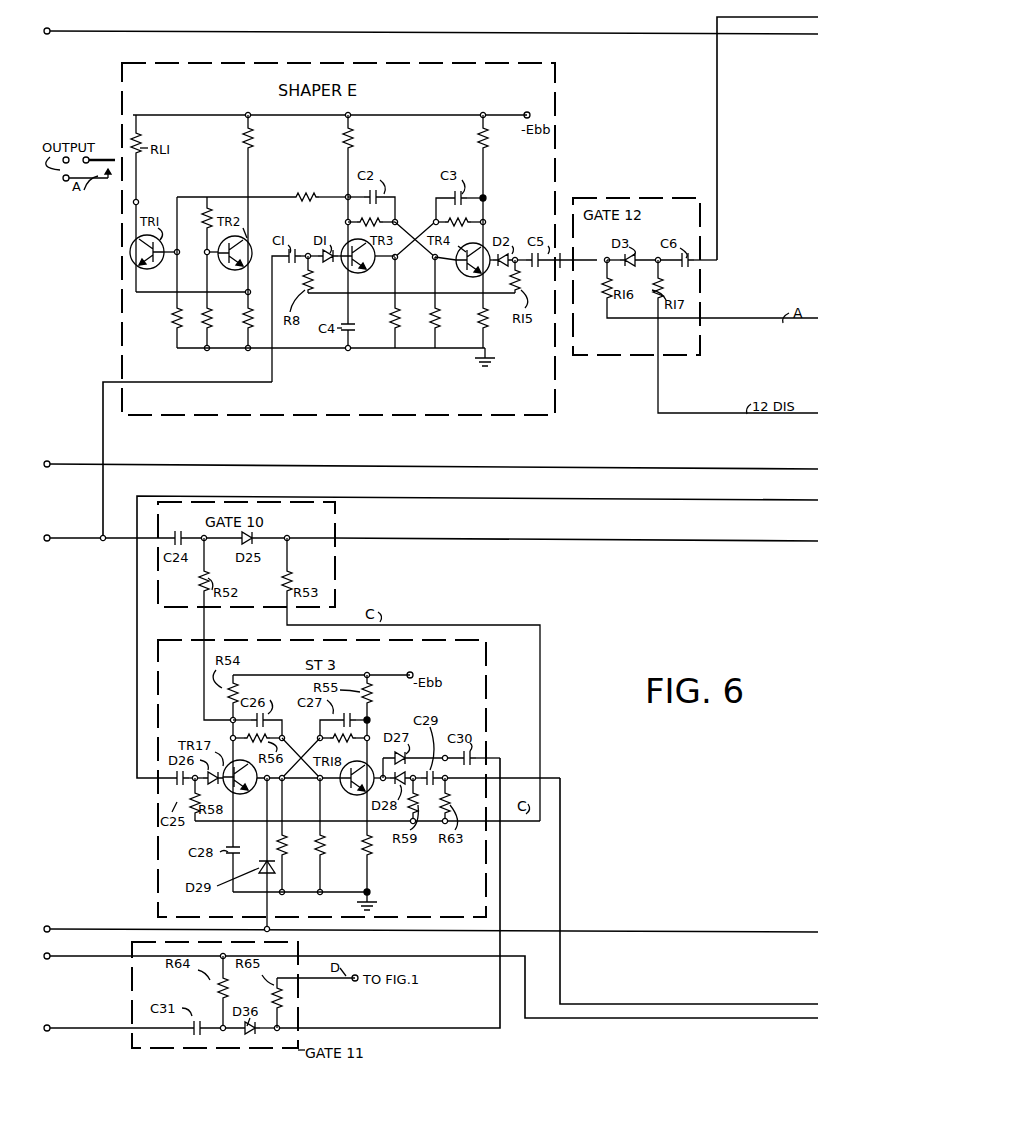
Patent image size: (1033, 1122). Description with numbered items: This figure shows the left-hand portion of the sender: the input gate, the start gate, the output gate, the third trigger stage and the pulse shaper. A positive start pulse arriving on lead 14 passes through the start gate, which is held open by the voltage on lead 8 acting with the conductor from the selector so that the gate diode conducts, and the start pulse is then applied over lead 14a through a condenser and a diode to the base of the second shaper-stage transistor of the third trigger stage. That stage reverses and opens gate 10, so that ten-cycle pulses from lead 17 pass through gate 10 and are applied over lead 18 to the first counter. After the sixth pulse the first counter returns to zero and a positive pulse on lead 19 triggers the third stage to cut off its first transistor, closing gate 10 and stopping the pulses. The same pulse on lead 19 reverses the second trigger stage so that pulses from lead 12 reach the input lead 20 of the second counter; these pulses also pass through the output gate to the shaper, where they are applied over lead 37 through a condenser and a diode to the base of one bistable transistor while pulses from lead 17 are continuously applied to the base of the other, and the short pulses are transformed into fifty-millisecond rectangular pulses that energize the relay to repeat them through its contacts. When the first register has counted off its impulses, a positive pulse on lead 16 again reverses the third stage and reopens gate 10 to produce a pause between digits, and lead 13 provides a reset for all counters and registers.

The gate 10 is at (77, 15).
The input lead 20 is at (767, 130).
The lead 12 is at (74, 449).
The lead 17 is at (68, 522).
The lead 19 is at (758, 500).
The lead 18 is at (758, 543).
The reset lead 13 is at (78, 911).
The lead 8 is at (86, 950).
The lead 14 is at (82, 1022).
The lead 16 is at (772, 1007).
The lead 14a is at (502, 763).
The lead 37 is at (570, 271).